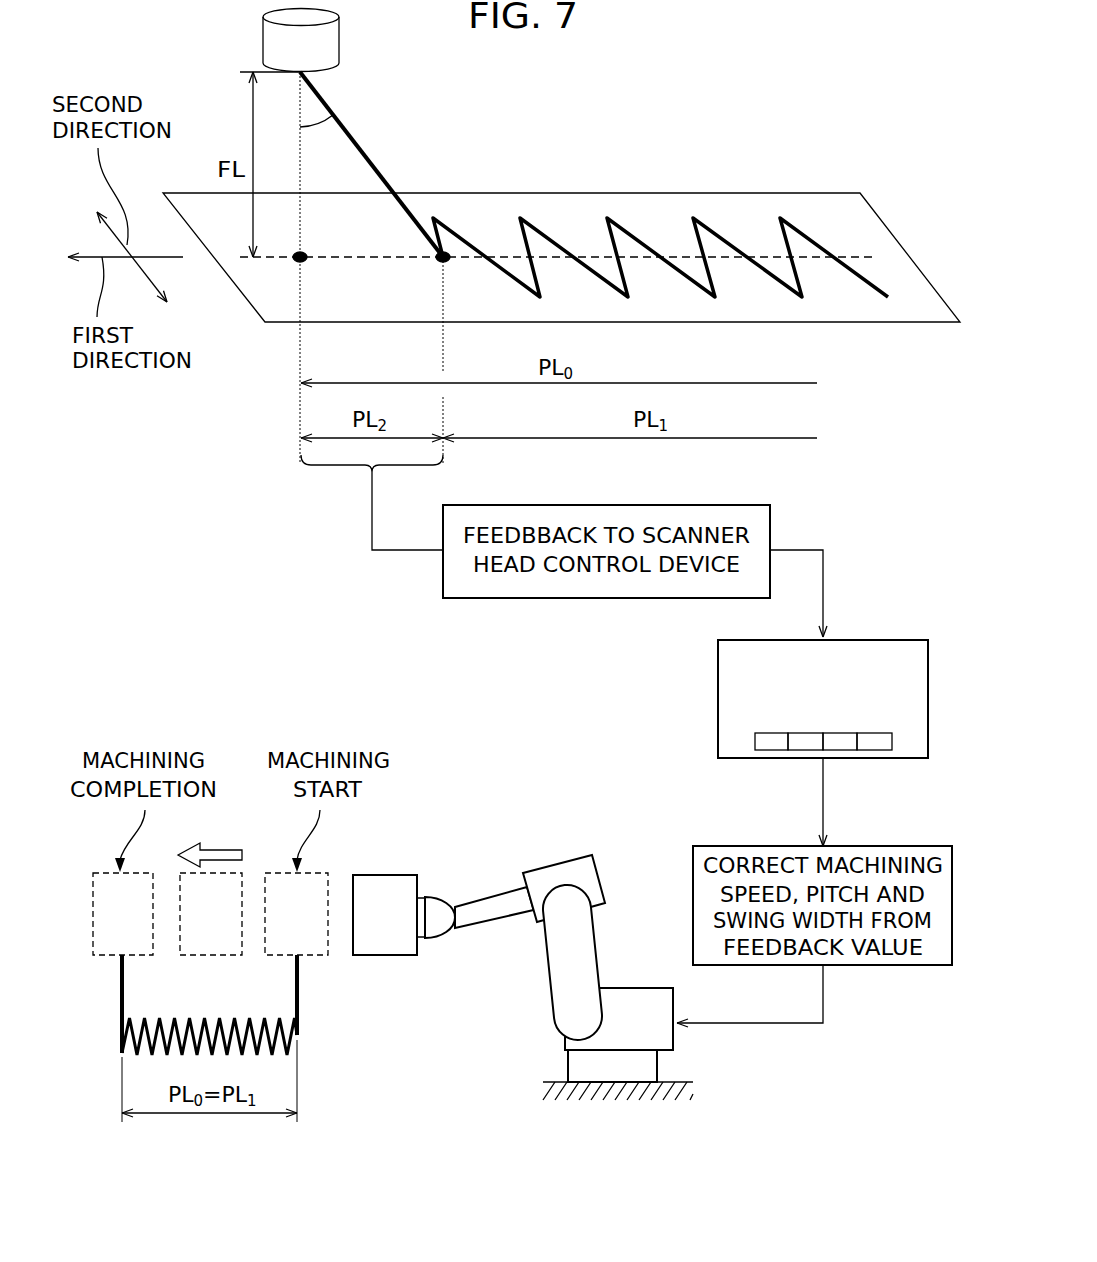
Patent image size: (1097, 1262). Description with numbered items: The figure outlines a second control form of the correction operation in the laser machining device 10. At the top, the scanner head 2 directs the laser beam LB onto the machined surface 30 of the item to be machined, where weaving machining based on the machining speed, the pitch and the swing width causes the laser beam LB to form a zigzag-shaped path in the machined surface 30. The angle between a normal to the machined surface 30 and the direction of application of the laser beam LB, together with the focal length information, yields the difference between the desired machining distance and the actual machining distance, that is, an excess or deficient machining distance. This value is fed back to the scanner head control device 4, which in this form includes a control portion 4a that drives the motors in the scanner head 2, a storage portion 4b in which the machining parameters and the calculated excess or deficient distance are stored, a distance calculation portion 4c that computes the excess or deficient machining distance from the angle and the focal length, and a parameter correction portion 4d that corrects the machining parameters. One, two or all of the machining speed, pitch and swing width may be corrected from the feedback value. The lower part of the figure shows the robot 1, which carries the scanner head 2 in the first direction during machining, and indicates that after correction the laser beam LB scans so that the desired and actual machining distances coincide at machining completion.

The robot 1 is at (597, 958).
The scanner head 2 is at (340, 40).
The scanner head control device 4 is at (892, 640).
The control portion 4a is at (772, 746).
The storage portion 4b is at (812, 746).
The distance calculation portion 4c is at (840, 746).
The parameter correction portion 4d is at (875, 746).
The laser machining device 10 is at (555, 931).
The machined surface of the item to be machined 30 is at (787, 192).
The laser beam LB is at (358, 143).